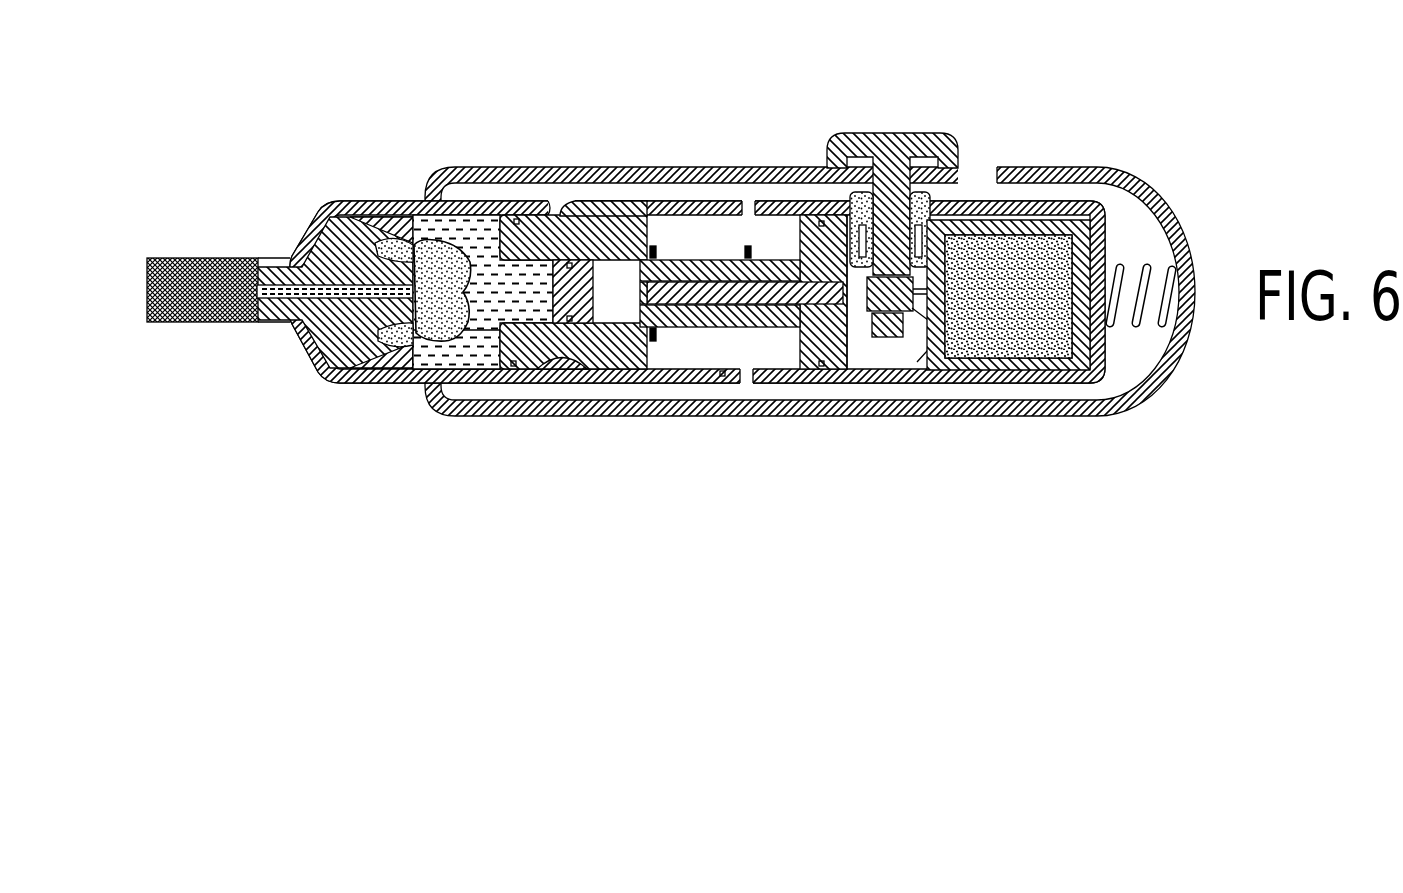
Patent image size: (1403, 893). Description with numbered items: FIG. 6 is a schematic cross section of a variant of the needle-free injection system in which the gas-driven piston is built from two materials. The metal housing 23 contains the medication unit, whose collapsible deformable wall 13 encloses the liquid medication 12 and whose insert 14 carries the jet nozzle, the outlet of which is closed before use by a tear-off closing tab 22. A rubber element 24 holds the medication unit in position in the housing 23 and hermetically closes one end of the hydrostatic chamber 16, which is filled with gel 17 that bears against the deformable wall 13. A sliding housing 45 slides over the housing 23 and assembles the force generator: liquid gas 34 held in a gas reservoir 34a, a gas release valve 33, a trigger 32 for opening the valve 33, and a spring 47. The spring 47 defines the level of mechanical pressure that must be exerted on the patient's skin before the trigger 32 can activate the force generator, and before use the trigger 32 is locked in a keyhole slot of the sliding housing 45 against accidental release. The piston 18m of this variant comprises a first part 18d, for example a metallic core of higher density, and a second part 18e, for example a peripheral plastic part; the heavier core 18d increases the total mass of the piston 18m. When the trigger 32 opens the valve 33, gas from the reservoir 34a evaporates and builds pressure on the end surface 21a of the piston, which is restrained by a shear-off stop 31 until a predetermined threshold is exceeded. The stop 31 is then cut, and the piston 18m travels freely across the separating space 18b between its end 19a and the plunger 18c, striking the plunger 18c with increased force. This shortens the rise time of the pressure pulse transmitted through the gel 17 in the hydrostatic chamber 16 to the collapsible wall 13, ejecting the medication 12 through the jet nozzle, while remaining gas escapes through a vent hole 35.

The liquid medication 12 is at (401, 378).
The deformable wall 13 is at (425, 197).
The insert 14 is at (302, 350).
The hydrostatic chamber 16 is at (457, 212).
The gel 17 is at (470, 350).
The separating space 18b is at (607, 310).
The plunger 18c is at (567, 288).
The first part of piston 18d is at (780, 280).
The second part of piston 18e is at (680, 268).
The piston 18m is at (752, 258).
The piston end 19a is at (637, 290).
The end surface of piston 21a is at (847, 348).
The tear-off closing tab 22 is at (187, 323).
The metal housing 23 is at (317, 367).
The rubber element 24 is at (533, 337).
The shear-off stop 31 is at (655, 340).
The trigger 32 is at (930, 142).
The gas release valve 33 is at (908, 338).
The liquid gas 34 is at (1030, 235).
The gas reservoir 34a is at (1083, 203).
The vent hole 35 is at (747, 377).
The sliding housing 45 is at (1038, 408).
The spring 47 is at (1148, 260).